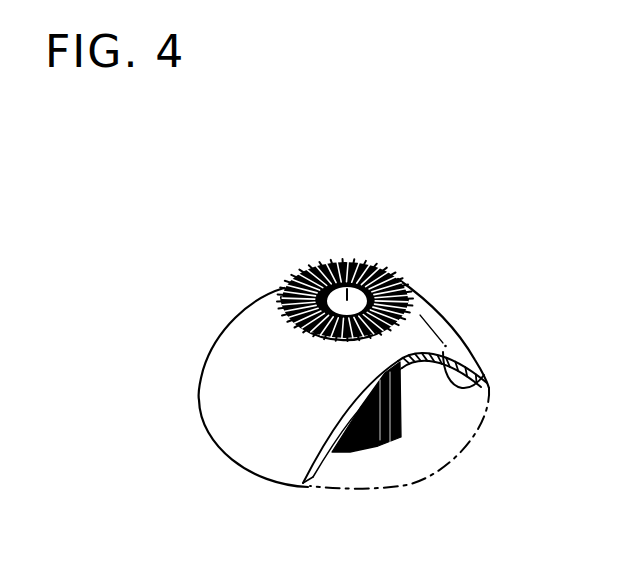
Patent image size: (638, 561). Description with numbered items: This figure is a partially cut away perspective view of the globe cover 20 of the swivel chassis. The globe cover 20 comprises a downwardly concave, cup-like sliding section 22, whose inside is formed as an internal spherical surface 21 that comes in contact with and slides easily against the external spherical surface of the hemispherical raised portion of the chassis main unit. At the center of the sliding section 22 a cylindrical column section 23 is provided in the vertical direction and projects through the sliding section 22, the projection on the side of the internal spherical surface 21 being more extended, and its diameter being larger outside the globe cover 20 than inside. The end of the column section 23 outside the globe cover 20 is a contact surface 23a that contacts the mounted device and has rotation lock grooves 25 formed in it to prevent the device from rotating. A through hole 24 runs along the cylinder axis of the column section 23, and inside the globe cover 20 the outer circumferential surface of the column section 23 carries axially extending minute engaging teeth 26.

The globe cover 20 is at (183, 336).
The internal spherical surface 21 is at (479, 390).
The sliding section 22 is at (278, 452).
The cylindrical column section 23 is at (400, 397).
The contact surface 23a is at (381, 268).
The through hole 24 is at (330, 262).
The rotation lock grooves 25 is at (402, 283).
The engaging teeth 26 is at (393, 450).